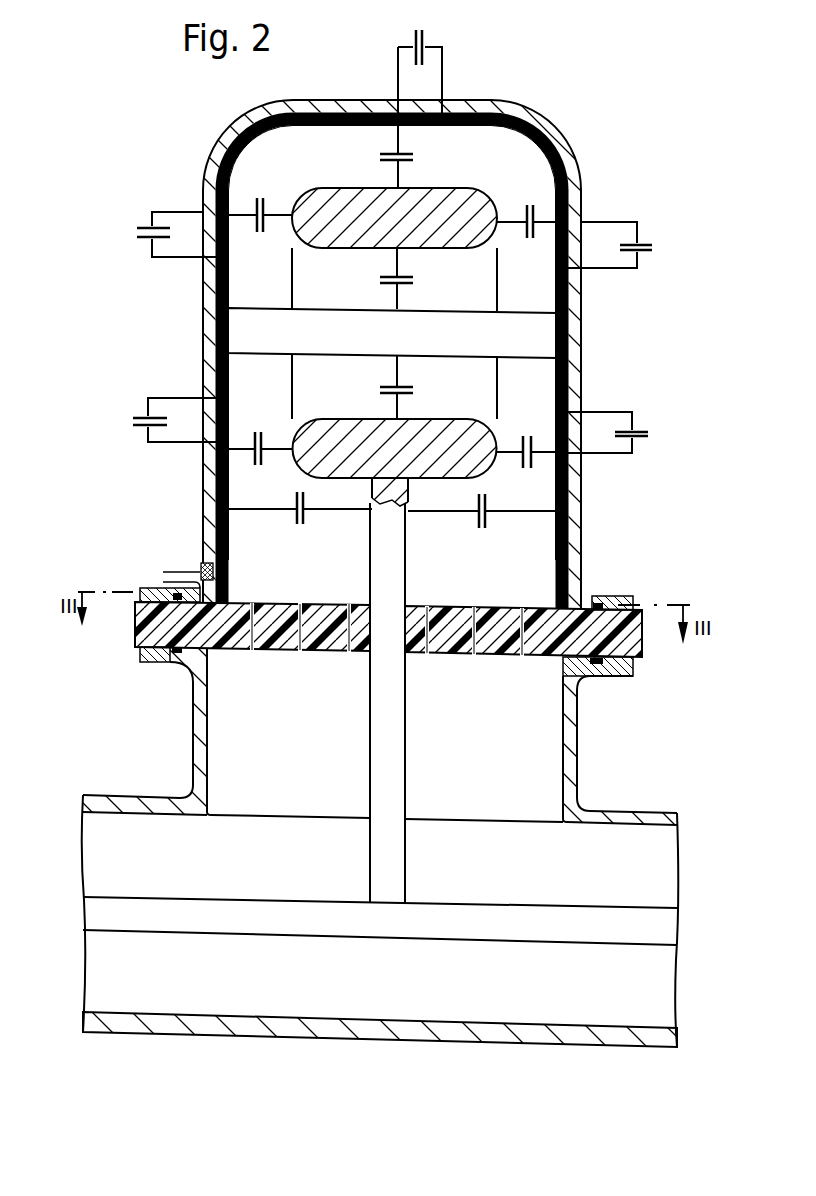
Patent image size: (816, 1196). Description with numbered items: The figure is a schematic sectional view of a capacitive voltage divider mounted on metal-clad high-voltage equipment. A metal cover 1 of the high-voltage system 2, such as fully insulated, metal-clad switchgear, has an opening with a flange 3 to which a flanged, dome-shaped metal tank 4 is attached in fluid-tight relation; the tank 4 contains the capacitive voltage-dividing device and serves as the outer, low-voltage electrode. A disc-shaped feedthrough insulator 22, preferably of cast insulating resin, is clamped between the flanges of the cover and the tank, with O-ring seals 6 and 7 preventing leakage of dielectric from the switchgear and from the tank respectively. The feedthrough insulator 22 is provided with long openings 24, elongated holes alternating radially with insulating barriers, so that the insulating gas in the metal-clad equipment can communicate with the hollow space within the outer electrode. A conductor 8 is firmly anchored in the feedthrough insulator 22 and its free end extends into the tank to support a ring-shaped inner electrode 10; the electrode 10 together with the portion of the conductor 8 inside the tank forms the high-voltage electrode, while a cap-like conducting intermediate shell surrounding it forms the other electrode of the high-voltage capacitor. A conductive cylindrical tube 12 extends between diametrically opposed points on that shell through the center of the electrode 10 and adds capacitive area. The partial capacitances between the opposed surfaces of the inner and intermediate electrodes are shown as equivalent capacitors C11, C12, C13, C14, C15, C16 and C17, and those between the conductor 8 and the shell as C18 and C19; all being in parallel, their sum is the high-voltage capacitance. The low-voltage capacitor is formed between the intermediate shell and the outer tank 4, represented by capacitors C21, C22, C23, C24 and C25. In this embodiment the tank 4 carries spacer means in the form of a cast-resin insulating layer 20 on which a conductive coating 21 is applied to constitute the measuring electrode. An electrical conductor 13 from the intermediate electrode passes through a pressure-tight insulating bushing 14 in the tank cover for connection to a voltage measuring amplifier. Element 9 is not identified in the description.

The metal cover 1 is at (127, 802).
The high-voltage system 2 is at (105, 974).
The flange 3 is at (188, 657).
The dome-shaped metal tank 4 is at (207, 500).
The O-ring seal 6 is at (170, 657).
The O-ring seal 7 is at (175, 592).
The conductor 8 is at (387, 742).
The plate 9 is at (469, 921).
The ring-shaped inner electrode 10 is at (320, 206).
The conductive cylindrical tube 12 is at (556, 366).
The electrical conductor 13 is at (172, 570).
The pressure-tight insulating bushing 14 is at (201, 566).
The insulating layer 20 is at (517, 133).
The conductive coating 21 is at (554, 160).
The feedthrough insulator 22 is at (367, 656).
The long openings 24 is at (521, 657).
The equivalent capacitor C11 is at (252, 208).
The equivalent capacitor C12 is at (392, 153).
The equivalent capacitor C13 is at (535, 216).
The equivalent capacitor C14 is at (383, 284).
The equivalent capacitor C15 is at (253, 433).
The equivalent capacitor C16 is at (385, 387).
The equivalent capacitor C17 is at (530, 436).
The equivalent capacitor C18 is at (558, 514).
The equivalent capacitor C19 is at (297, 500).
The equivalent capacitor C21 is at (162, 231).
The equivalent capacitor C22 is at (444, 68).
The equivalent capacitor C23 is at (625, 245).
The equivalent capacitor C24 is at (164, 415).
The equivalent capacitor C25 is at (624, 428).